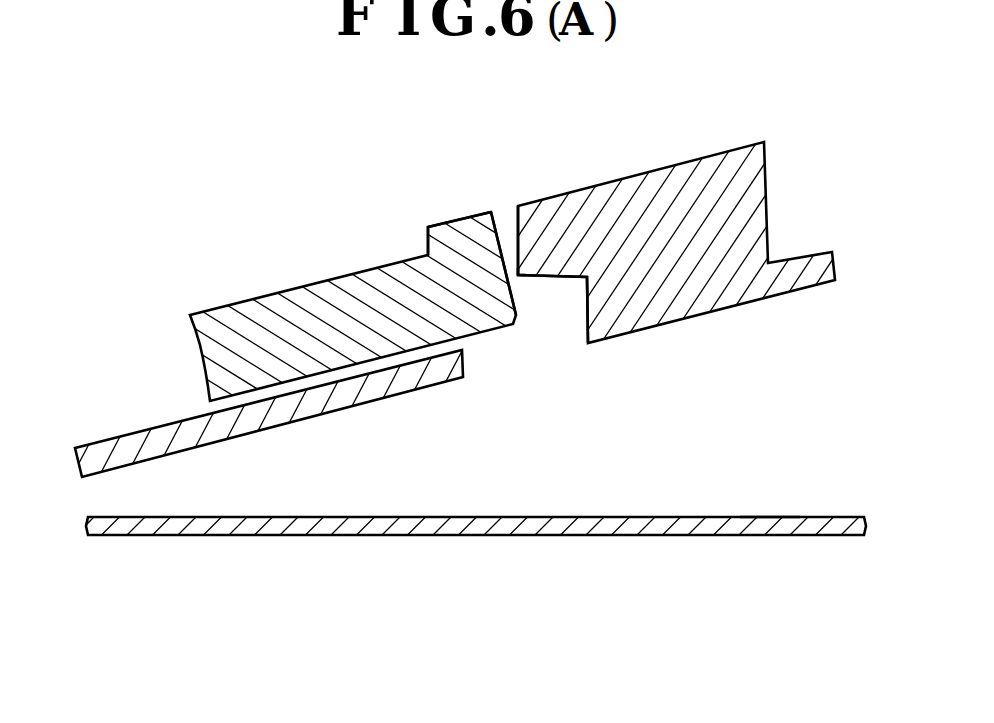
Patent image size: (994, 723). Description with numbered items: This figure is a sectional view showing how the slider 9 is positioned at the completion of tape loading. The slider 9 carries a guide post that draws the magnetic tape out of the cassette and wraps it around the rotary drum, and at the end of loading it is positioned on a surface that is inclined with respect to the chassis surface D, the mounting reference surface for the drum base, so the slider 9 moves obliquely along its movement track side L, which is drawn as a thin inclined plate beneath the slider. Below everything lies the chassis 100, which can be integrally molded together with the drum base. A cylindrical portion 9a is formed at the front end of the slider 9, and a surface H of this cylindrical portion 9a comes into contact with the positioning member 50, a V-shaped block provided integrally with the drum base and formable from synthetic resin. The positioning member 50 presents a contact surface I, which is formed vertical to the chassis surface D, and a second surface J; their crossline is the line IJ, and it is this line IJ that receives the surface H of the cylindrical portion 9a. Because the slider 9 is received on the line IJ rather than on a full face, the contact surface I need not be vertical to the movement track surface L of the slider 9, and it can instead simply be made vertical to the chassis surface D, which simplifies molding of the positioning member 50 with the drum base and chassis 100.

The slider 9 is at (292, 310).
The cylindrical portion 9a is at (443, 228).
The positioning member 50 is at (688, 203).
The chassis 100 is at (652, 528).
The surface of the cylindrical portion H is at (514, 237).
The contact surface of the positioning member I is at (513, 237).
The line (crossline of surfaces I and J) IJ is at (511, 243).
The surface of the positioning member J is at (559, 278).
The movement track side L is at (354, 374).
The chassis surface D is at (772, 517).